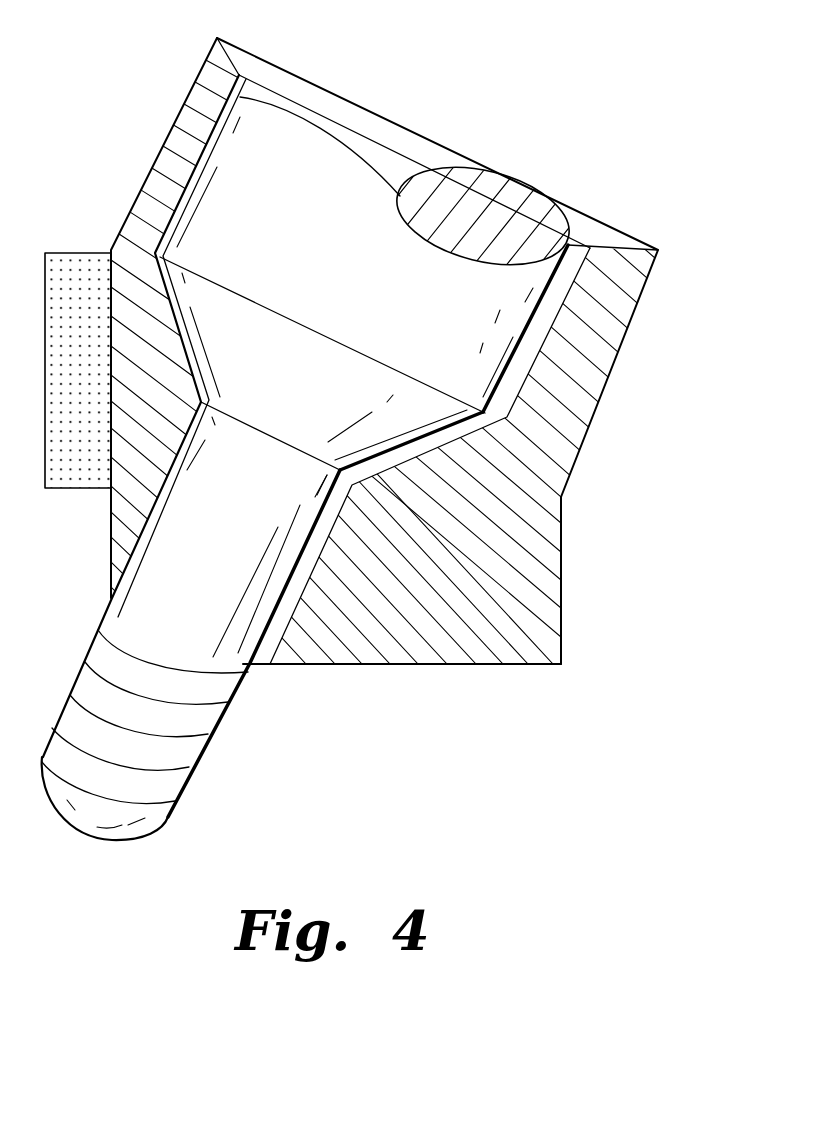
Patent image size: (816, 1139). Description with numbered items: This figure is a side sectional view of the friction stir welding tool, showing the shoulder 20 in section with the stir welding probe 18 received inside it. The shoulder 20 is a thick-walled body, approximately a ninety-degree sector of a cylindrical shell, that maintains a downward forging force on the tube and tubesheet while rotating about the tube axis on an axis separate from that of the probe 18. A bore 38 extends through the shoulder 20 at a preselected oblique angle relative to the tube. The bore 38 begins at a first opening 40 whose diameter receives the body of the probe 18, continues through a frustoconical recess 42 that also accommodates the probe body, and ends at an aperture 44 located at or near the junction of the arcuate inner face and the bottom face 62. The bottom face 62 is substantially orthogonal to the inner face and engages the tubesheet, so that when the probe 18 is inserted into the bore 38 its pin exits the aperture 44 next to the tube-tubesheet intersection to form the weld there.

The stir welding probe 18 is at (300, 130).
The shoulder 20 is at (625, 277).
The bore 38 is at (467, 115).
The first opening 40 is at (533, 337).
The frustoconical recess 42 is at (462, 432).
The aperture 44 is at (255, 664).
The bottom face 62 is at (463, 665).